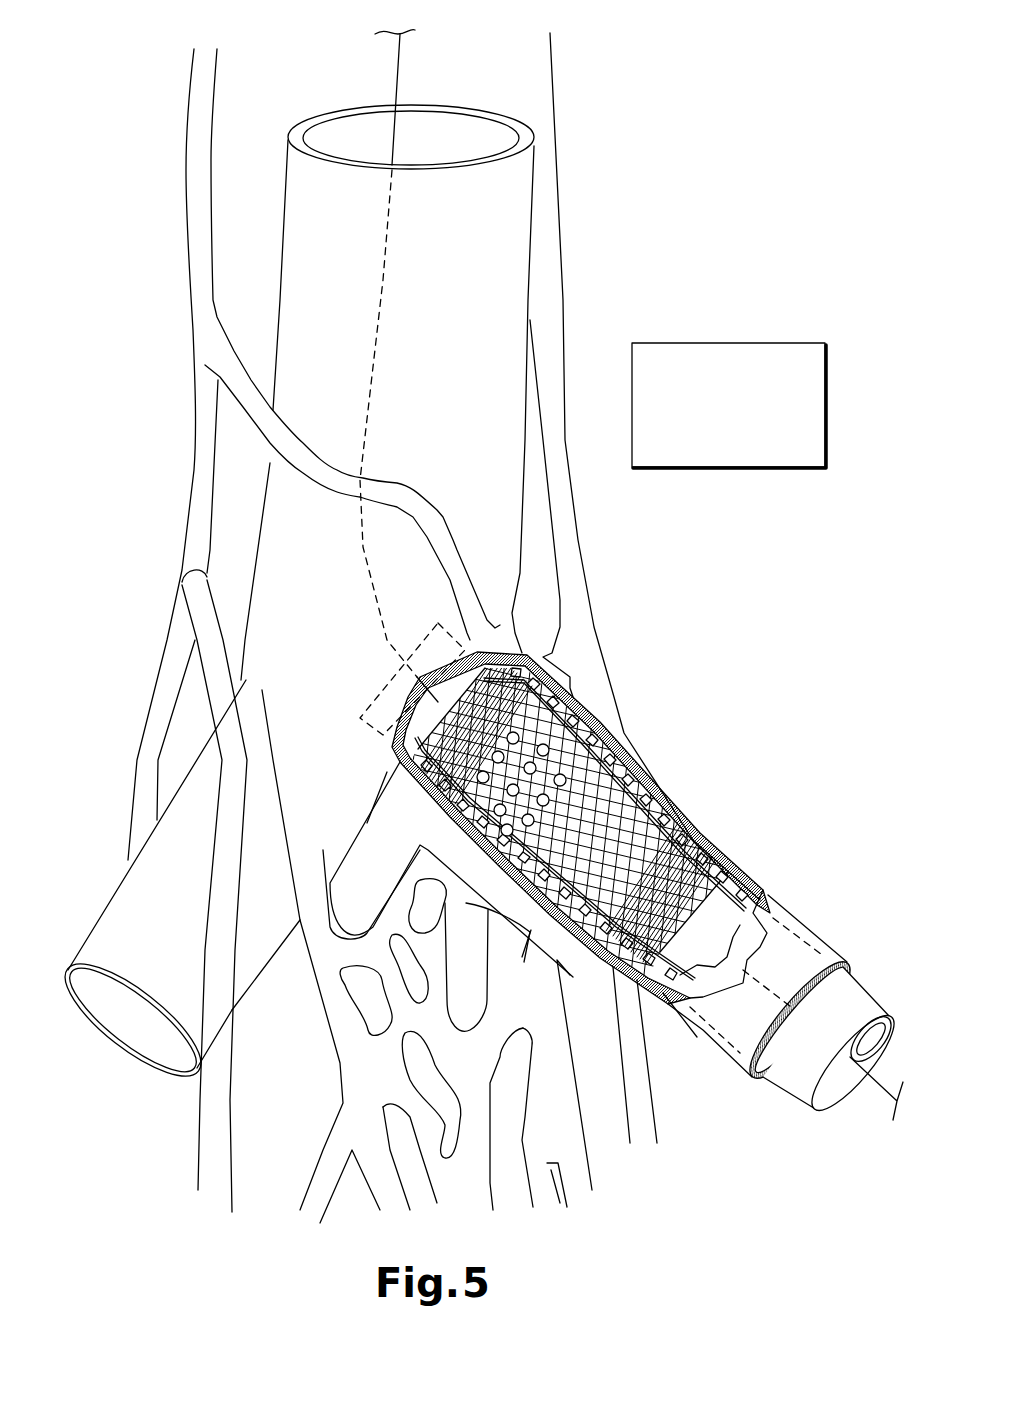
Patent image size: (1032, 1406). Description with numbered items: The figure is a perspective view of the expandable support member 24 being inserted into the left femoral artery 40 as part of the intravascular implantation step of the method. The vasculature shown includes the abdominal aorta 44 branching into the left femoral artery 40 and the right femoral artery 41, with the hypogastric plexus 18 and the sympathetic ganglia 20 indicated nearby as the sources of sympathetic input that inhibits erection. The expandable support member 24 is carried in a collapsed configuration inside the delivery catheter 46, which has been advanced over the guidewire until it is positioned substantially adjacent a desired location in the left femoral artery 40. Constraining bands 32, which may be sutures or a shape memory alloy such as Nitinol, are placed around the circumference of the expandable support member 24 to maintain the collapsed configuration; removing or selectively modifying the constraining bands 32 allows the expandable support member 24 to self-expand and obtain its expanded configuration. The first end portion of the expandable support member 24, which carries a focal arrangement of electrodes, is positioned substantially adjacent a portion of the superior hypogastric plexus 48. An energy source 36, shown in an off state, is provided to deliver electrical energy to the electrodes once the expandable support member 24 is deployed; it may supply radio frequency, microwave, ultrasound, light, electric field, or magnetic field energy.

The hypogastric plexus 18 is at (520, 1000).
The sympathetic ganglia 20 is at (186, 301).
The expandable support member 24 is at (684, 790).
The constraining band 32 is at (413, 776).
The energy source 36 is at (715, 343).
The left femoral artery 40 is at (804, 908).
The right femoral artery 41 is at (105, 876).
The abdominal aorta 44 is at (302, 96).
The delivery catheter 46 is at (797, 1075).
The superior hypogastric plexus 48 is at (598, 685).